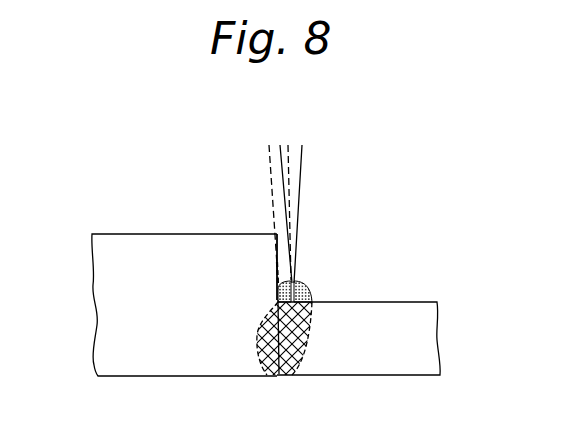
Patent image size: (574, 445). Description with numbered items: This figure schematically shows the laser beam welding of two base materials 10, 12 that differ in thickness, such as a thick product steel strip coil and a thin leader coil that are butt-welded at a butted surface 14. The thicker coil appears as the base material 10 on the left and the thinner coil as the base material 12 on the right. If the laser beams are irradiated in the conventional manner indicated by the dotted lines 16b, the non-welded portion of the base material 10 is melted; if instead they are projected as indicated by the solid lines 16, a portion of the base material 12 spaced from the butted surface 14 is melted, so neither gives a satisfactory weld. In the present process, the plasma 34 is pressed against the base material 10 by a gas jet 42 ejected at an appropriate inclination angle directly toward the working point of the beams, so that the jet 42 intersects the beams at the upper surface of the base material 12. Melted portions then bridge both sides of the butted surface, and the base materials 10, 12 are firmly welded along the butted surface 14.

The base material 10 is at (99, 318).
The base material 12 is at (437, 340).
The butted surface 14 is at (255, 352).
The solid lines 16 is at (305, 168).
The dotted lines 16b is at (267, 156).
The plasma 34 is at (308, 286).
The gas jet 42 is at (313, 290).